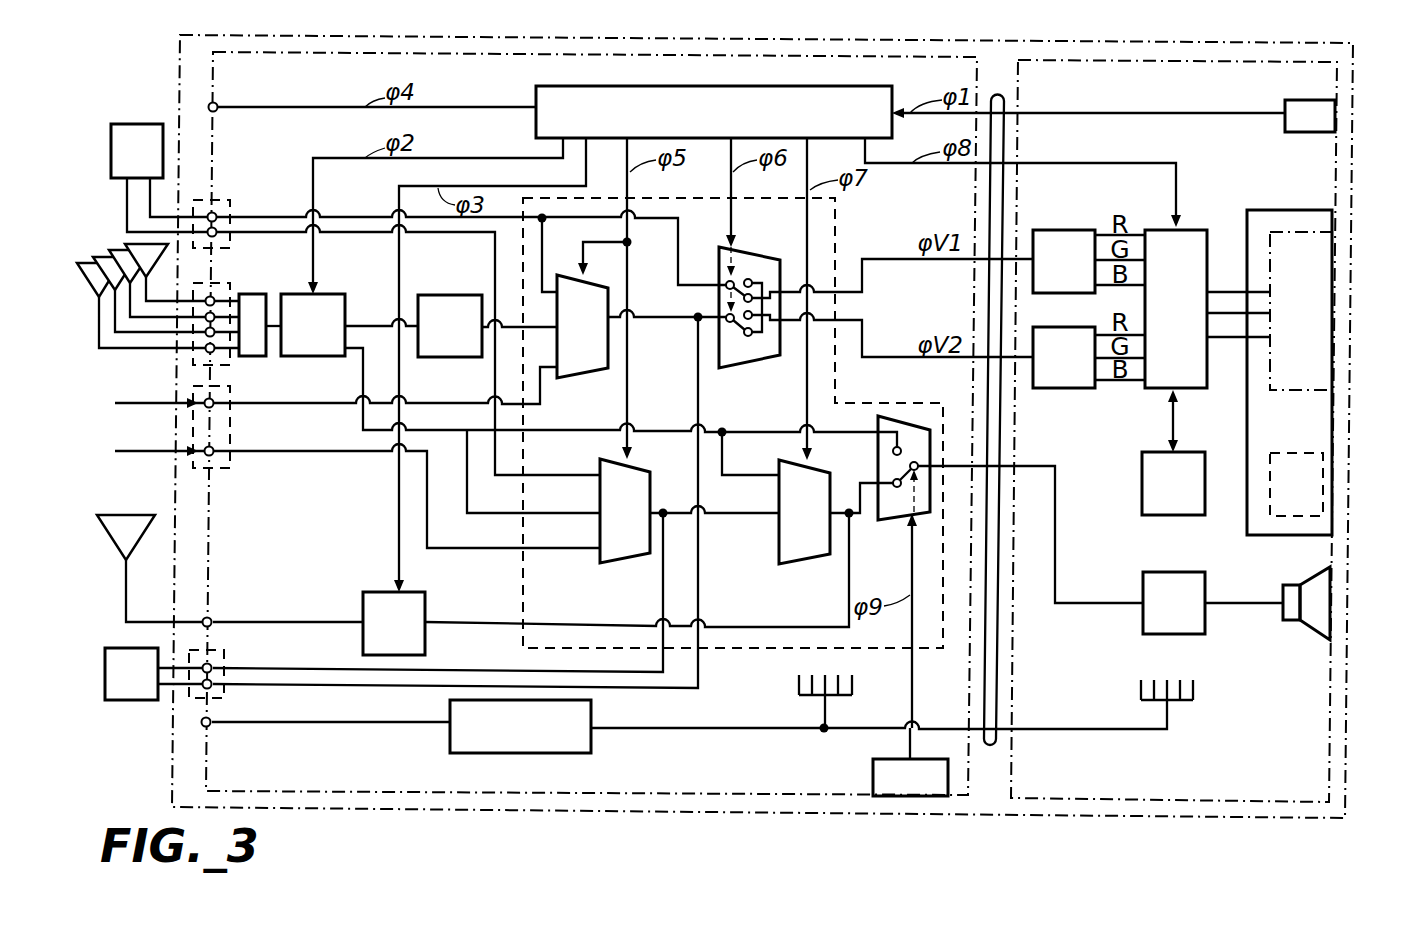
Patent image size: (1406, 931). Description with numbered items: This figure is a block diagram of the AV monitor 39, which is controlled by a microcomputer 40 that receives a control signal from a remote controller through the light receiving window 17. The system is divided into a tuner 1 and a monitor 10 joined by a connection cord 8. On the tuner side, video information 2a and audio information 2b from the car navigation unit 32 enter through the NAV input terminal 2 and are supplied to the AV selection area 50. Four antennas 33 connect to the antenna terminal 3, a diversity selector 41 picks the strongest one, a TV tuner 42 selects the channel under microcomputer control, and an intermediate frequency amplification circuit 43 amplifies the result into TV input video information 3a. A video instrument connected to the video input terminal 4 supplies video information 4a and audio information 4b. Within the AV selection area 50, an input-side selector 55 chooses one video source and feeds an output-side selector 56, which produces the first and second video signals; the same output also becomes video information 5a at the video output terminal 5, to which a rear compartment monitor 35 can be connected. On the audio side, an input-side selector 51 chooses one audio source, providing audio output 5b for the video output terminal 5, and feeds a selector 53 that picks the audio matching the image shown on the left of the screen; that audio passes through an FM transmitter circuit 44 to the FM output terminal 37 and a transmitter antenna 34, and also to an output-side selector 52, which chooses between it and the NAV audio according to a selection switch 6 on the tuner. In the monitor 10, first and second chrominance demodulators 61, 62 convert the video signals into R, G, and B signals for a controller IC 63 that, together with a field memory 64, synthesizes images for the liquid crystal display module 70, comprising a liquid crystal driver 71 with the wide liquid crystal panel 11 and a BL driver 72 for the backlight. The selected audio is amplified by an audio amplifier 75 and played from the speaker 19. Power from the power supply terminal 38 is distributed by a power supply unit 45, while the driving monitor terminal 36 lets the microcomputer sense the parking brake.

The tuner 1 is at (563, 797).
The NAV input terminal 2 is at (238, 215).
The video information 2a is at (217, 217).
The audio information 2b is at (217, 234).
The antenna terminal 3 is at (193, 368).
The TV input video information 3a is at (445, 328).
The video input terminal 4 is at (238, 428).
The video information 4a is at (217, 403).
The audio information 4b is at (217, 453).
The video output terminal 5 is at (233, 667).
The video information for video output 5a is at (214, 686).
The audio output 5b is at (214, 667).
The selection switch 6 is at (840, 778).
The connection cord 8 is at (991, 748).
The monitor 10 is at (1112, 805).
The wide liquid crystal panel 11 is at (1332, 275).
The light receiving window 17 is at (1327, 125).
The speaker 19 is at (1320, 605).
The car navigation unit 32 is at (145, 124).
The antennas 33 is at (107, 256).
The transmitter antenna 34 is at (125, 515).
The rear compartment monitor 35 is at (125, 650).
The driving monitor terminal 36 is at (216, 103).
The FM output terminal 37 is at (212, 618).
The power supply terminal 38 is at (200, 725).
The AV monitor 39 is at (1225, 820).
The microcomputer 40 is at (536, 97).
The diversity selector 41 is at (255, 297).
The TV tuner 42 is at (320, 297).
The intermediate frequency amplification circuit 43 is at (468, 360).
The FM transmitter circuit 44 is at (365, 592).
The power supply unit 45 is at (475, 753).
The AV selection area 50 is at (835, 248).
The input-side selector 51 is at (618, 578).
The output-side selector 52 is at (898, 522).
The selector 53 is at (812, 470).
The input-side selector 55 is at (592, 383).
The output-side selector 56 is at (745, 258).
The first chrominance demodulator 61 is at (1042, 232).
The second chrominance demodulator 62 is at (1060, 390).
The controller IC 63 is at (1185, 232).
The field memory 64 is at (1145, 500).
The liquid crystal display module 70 is at (1302, 394).
The liquid crystal driver 71 is at (1328, 362).
The BL driver 72 is at (1328, 482).
The audio amplifier 75 is at (1148, 633).